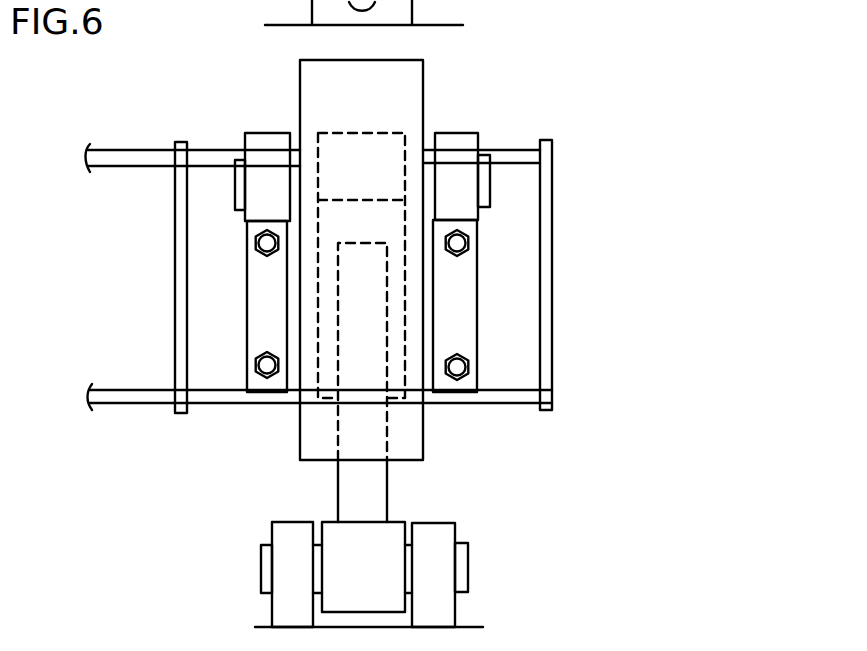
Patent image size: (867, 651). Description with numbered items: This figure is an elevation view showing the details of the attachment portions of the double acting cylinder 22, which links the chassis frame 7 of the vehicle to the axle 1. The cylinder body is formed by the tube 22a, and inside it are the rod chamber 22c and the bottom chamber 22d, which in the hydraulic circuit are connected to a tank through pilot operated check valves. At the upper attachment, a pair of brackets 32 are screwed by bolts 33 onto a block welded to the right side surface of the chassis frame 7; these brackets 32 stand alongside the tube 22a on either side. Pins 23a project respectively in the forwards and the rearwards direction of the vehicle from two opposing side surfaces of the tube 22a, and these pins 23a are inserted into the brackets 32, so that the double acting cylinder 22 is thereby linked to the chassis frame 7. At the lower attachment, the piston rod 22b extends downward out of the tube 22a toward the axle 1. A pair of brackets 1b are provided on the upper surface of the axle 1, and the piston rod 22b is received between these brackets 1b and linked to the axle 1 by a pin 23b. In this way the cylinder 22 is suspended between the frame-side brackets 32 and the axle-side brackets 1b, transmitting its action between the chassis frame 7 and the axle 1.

The axle 1 is at (450, 30).
The brackets 1b is at (286, 532).
The chassis frame 7 is at (127, 157).
The double acting cylinder 22 is at (299, 106).
The tube 22a is at (478, 118).
The piston rod 22b is at (387, 497).
The rod chamber 22c is at (398, 412).
The bottom chamber 22d is at (405, 150).
The pins 23a is at (235, 185).
The pin 23b is at (261, 573).
The brackets 32 is at (247, 290).
The bolts 33 is at (263, 377).